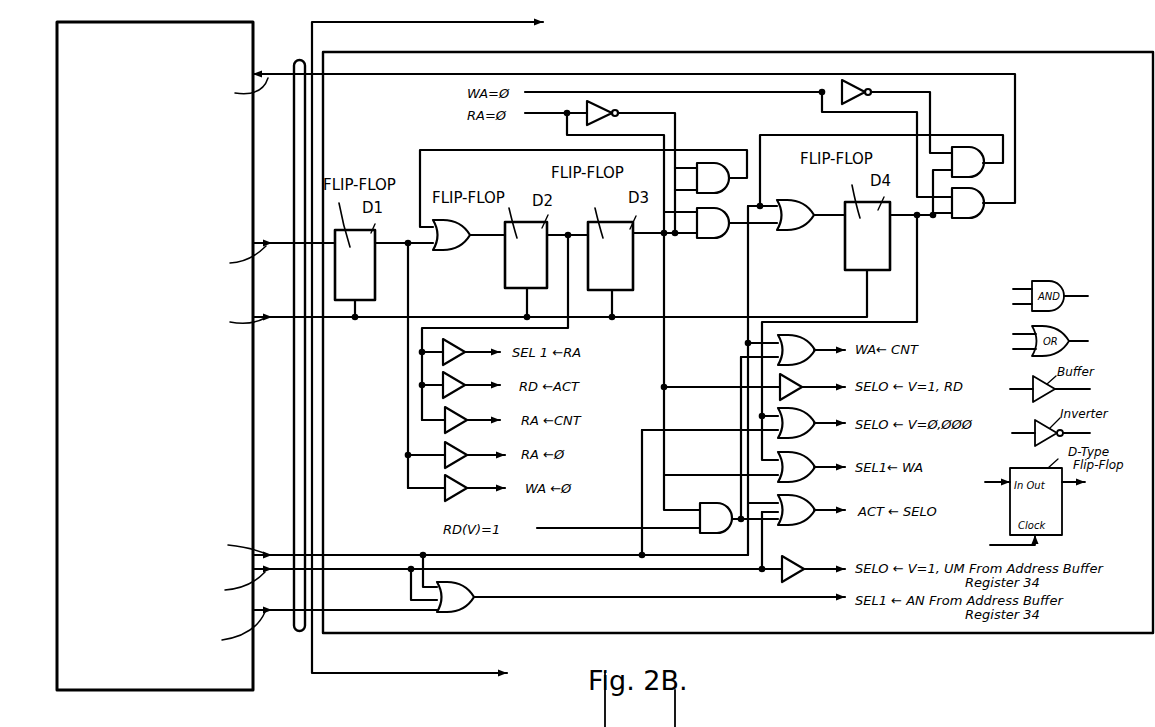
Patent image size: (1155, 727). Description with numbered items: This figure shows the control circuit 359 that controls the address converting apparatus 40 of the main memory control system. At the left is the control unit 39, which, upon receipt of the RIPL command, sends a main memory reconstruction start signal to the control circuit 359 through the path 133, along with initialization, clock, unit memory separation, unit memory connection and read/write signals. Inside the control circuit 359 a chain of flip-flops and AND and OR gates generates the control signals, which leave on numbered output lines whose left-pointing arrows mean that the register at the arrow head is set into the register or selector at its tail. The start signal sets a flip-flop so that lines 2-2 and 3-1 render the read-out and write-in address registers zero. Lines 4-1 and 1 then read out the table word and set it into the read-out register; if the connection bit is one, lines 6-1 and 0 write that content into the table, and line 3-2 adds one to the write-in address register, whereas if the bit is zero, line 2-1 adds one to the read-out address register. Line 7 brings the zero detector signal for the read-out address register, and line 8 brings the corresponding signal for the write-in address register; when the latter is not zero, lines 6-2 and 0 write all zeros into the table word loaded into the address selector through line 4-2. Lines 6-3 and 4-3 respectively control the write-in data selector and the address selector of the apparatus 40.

The control unit 39 is at (157, 690).
The path 133 is at (299, 632).
The address converting apparatus 40 is at (382, 674).
The control circuit 359 is at (790, 30).
The line 8 is at (673, 83).
The line 7 is at (546, 105).
The line 4-1 is at (471, 349).
The line 1 is at (471, 382).
The line 2-1 is at (472, 417).
The line 2-2 is at (475, 452).
The line 3-1 is at (475, 486).
The line 3-2 is at (811, 346).
The line 6-1 is at (812, 382).
The line 6-2 is at (811, 420).
The line 4-2 is at (811, 464).
The line 0 is at (811, 506).
The line 6-3 is at (813, 564).
The line 4-3 is at (641, 596).